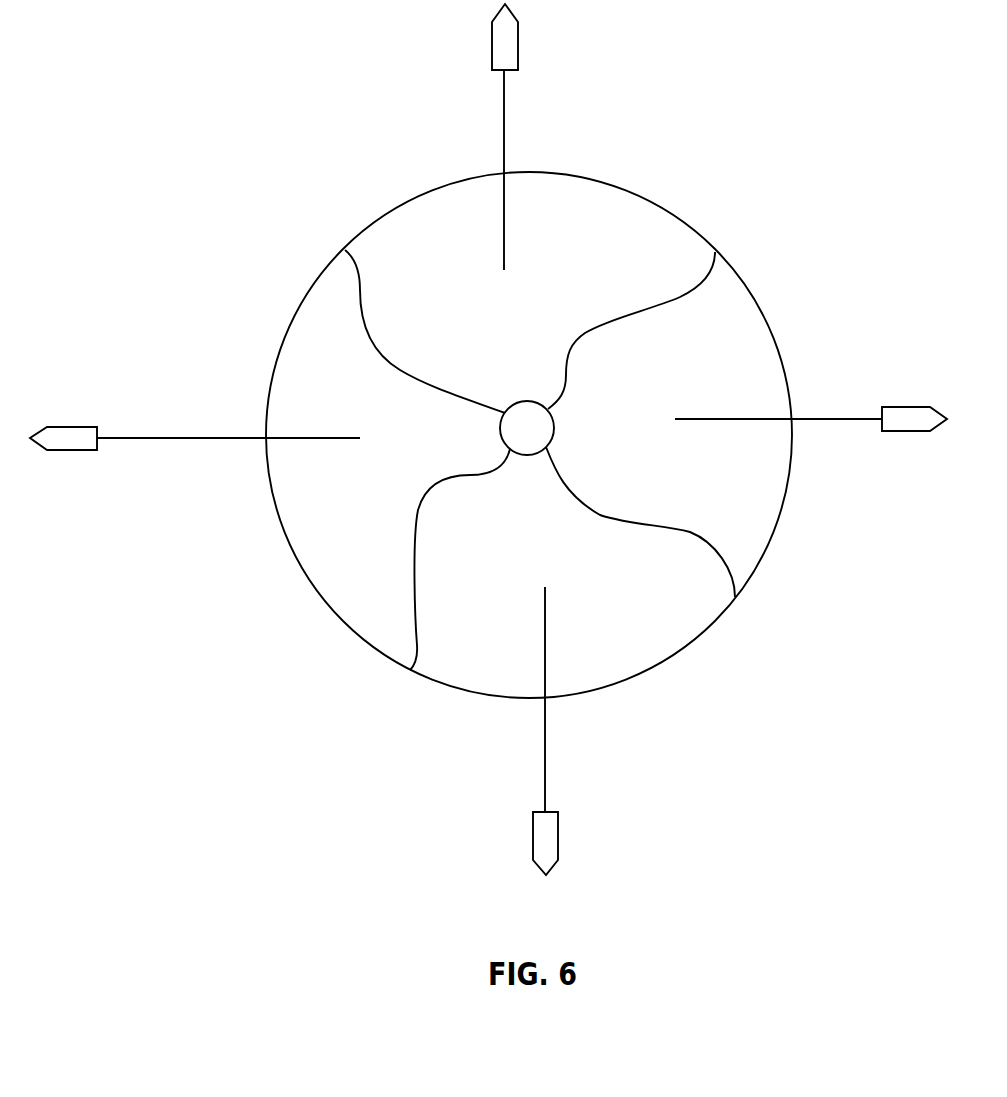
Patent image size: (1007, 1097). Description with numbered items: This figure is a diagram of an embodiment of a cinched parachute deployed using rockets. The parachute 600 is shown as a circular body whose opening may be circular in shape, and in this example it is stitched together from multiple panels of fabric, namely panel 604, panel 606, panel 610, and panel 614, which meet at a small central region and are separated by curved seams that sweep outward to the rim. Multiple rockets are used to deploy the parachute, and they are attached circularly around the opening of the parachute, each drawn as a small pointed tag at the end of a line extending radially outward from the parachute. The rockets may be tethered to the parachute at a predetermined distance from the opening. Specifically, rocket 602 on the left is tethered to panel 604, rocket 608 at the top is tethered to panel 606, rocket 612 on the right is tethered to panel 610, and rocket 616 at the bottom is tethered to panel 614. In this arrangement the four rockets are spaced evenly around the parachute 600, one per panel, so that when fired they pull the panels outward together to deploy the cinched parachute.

The parachute 600 is at (277, 512).
The rocket 602 is at (72, 425).
The panel 604 is at (292, 395).
The panel 606 is at (393, 220).
The rocket 608 is at (490, 43).
The panel 610 is at (612, 335).
The rocket 612 is at (905, 405).
The panel 614 is at (468, 485).
The rocket 616 is at (532, 832).